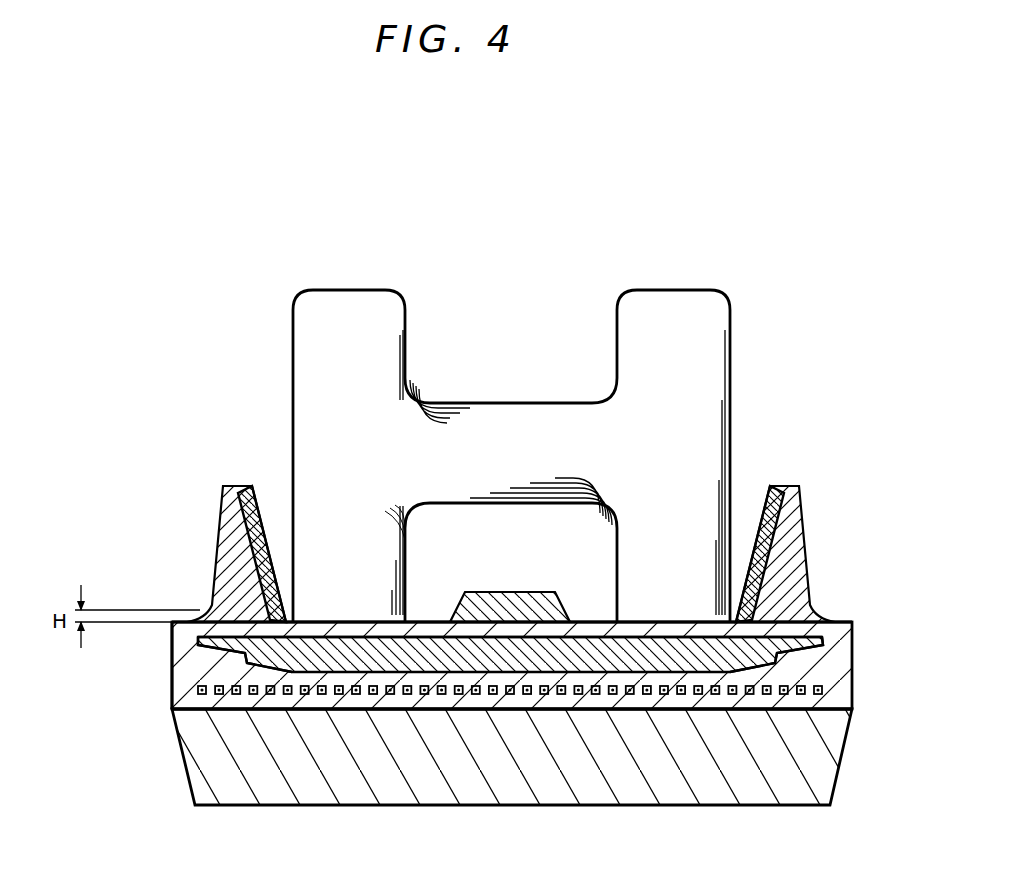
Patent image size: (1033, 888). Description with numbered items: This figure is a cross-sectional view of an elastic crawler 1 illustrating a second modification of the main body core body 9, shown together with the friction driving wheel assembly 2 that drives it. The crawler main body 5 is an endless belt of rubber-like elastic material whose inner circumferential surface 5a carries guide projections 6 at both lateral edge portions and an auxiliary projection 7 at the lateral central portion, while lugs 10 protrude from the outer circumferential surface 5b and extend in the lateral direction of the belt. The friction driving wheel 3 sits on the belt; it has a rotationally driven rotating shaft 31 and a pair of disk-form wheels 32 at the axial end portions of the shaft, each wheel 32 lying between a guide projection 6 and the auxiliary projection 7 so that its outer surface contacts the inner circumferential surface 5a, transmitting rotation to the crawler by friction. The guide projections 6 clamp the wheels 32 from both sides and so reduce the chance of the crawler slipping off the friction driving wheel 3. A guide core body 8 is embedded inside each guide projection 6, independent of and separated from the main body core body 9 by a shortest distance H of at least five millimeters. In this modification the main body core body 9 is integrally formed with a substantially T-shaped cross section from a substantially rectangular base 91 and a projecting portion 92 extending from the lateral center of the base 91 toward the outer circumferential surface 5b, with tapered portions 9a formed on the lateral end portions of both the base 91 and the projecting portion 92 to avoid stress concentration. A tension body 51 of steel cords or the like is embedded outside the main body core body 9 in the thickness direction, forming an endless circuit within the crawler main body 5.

The elastic crawler 1 is at (168, 690).
The H-shaped body 2 is at (509, 426).
The friction driving wheel 3 is at (732, 295).
The rotating shaft 31 is at (505, 403).
The wheels 32 is at (312, 350).
The crawler main body 5 is at (835, 680).
The inner circumferential surface 5a is at (775, 621).
The outer circumferential surface 5b is at (770, 712).
The tension body 51 is at (785, 692).
The guide projections 6 is at (235, 548).
The auxiliary projections 7 is at (512, 603).
The guide core body 8 is at (262, 522).
The main body core body 9 is at (797, 640).
The tapered portions 9a is at (292, 672).
The base 91 is at (337, 642).
The projecting portion 92 is at (340, 700).
The lugs 10 is at (553, 800).